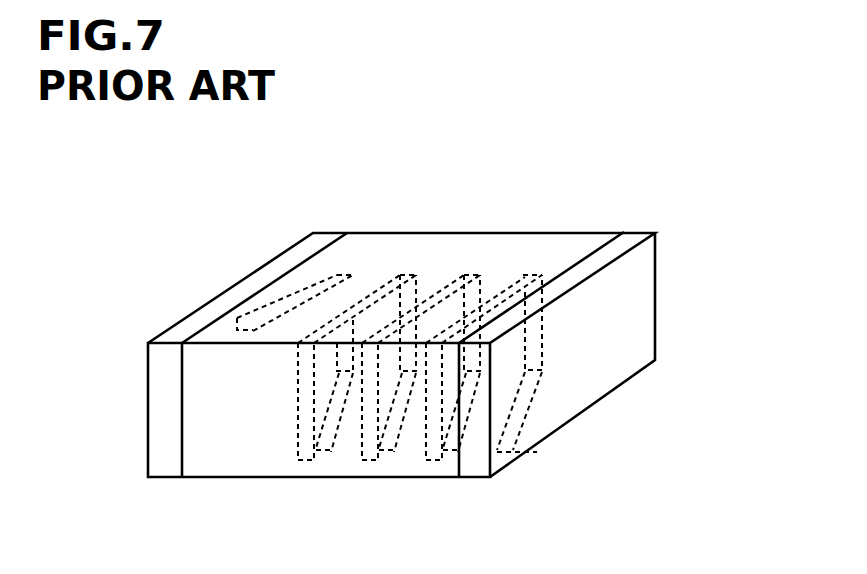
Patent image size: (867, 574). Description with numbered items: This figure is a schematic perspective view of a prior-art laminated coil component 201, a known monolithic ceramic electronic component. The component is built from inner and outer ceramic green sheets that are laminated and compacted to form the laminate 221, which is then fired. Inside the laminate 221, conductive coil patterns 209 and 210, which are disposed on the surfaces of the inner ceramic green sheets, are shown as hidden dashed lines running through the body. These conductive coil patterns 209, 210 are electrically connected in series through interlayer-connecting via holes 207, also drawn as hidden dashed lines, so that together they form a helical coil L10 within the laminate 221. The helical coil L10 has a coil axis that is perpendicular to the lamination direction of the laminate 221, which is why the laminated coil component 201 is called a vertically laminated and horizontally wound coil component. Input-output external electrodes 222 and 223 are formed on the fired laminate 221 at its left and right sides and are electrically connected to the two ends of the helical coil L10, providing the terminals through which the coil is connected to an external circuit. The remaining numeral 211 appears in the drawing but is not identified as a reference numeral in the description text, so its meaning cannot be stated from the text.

The laminated coil component 201 is at (210, 225).
The interlayer-connecting via hole 207 is at (362, 273).
The conductive coil pattern 209 is at (318, 285).
The conductive coil pattern 210 is at (329, 460).
The lead-out portion 211 is at (273, 292).
The laminate 221 is at (537, 233).
The input-output external electrode 222 is at (198, 312).
The input-output external electrode 223 is at (638, 338).
The helical coil L10 is at (290, 385).